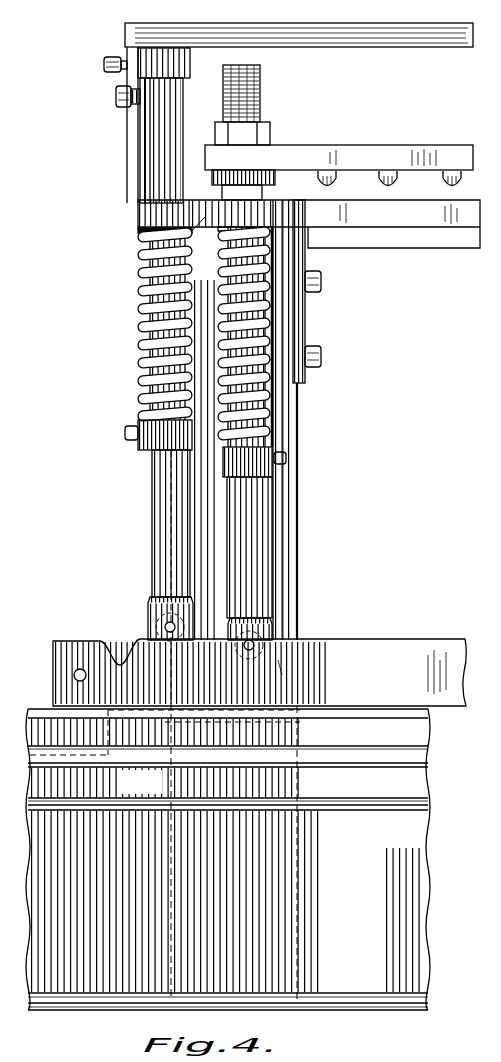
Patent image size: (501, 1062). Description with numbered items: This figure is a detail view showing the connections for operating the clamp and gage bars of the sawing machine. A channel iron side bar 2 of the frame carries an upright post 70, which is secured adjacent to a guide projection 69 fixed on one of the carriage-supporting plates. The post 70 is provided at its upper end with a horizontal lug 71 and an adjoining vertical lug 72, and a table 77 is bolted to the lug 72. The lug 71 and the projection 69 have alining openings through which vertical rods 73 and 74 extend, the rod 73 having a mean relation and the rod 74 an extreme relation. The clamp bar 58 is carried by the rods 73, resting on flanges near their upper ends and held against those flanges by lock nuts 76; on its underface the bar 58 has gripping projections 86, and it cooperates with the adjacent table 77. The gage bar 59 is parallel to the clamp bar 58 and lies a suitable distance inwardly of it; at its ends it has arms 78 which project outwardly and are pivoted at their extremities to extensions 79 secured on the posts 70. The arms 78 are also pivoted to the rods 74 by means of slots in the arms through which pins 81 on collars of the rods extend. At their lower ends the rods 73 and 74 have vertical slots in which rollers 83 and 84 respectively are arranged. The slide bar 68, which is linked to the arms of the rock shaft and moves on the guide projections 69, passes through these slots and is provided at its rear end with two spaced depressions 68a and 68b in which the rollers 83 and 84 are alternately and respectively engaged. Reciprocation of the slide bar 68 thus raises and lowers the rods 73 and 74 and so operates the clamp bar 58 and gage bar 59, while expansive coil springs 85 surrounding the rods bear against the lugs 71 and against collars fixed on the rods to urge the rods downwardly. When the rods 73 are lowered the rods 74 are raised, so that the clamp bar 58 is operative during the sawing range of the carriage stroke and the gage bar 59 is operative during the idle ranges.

The side bar 2 is at (400, 900).
The clamp bar 58 is at (413, 144).
The gage bar 59 is at (445, 31).
The slide bar 68 is at (370, 647).
The depression 68a is at (280, 667).
The depression 68b is at (98, 641).
The guide projection 69 is at (142, 782).
The upright post 70 is at (283, 505).
The horizontal lug 71 is at (145, 257).
The vertical lug 72 is at (285, 330).
The vertical rod 73 is at (255, 543).
The vertical rod 74 is at (167, 557).
The lock nut 76 is at (500, 541).
The table 77 is at (442, 212).
The arm 78 is at (127, 76).
The extension 79 is at (142, 177).
The pin 81 is at (103, 65).
The roller 83 is at (280, 637).
The roller 84 is at (150, 631).
The expansive coil spring 85 is at (190, 398).
The gripping projection 86 is at (328, 168).